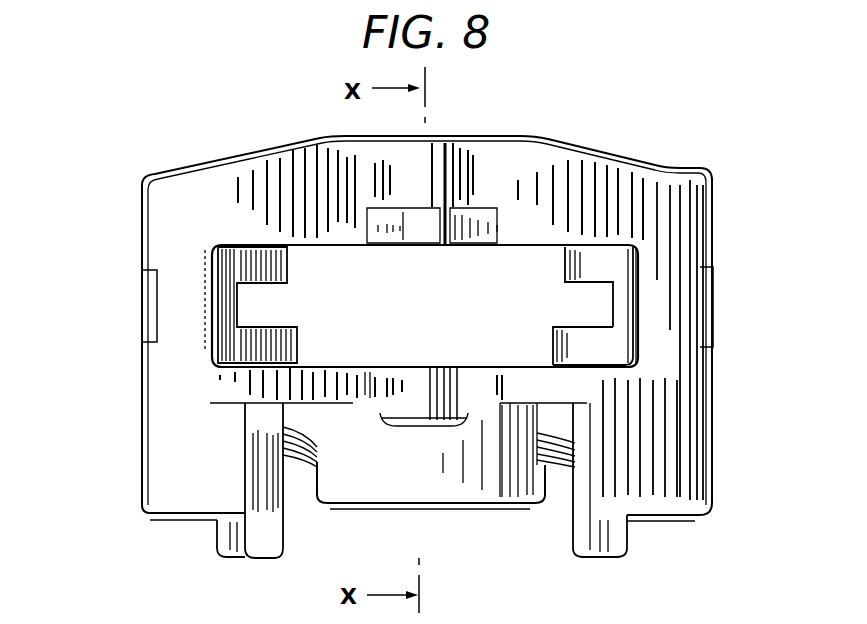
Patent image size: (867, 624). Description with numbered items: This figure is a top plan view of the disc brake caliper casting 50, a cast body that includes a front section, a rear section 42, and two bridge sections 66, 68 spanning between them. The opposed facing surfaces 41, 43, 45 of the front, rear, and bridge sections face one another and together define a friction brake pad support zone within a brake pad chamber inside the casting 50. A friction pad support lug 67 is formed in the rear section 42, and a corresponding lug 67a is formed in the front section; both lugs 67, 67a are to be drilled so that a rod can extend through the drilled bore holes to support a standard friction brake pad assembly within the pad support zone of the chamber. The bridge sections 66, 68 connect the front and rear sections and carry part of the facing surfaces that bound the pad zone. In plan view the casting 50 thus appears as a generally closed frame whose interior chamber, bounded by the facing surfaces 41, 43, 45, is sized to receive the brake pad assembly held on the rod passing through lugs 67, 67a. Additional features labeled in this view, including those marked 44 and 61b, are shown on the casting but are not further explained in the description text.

The disc brake caliper casting 50 is at (262, 143).
The friction pad support lug 67 is at (430, 208).
The opposed facing surface 43 is at (420, 250).
The rear section 42 is at (287, 267).
The opposed facing surface 45 is at (633, 265).
The right contact lower tab 44 is at (553, 337).
The opposed facing surface 41 is at (370, 378).
The bridge section 66 is at (163, 392).
The bridge section 68 is at (660, 373).
The lug 67a is at (423, 428).
The bottom edge 61b is at (670, 519).